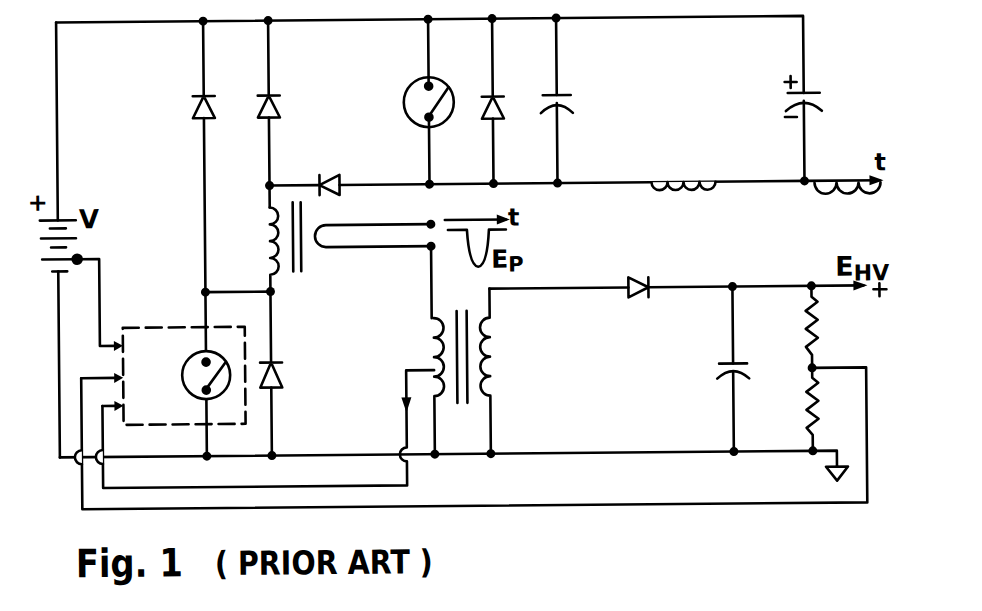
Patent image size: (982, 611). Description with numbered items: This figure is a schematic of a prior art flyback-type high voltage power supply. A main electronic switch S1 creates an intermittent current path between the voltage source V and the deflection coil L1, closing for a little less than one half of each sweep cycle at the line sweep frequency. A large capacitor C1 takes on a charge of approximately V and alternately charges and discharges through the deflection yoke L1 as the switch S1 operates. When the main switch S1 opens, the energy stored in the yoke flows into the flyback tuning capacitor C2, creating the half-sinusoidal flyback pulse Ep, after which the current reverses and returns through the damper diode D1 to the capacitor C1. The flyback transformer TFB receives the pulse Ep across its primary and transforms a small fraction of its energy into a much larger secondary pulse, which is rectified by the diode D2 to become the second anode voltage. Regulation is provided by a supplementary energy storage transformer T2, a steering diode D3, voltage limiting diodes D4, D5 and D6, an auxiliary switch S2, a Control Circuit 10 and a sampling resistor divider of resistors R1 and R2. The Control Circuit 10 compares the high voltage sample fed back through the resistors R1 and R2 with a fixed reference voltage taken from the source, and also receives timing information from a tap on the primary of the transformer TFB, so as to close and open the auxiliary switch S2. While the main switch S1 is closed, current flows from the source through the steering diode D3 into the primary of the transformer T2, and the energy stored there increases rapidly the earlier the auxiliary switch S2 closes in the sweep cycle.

The Control Circuit 10 is at (197, 369).
The damper diode D1 is at (483, 127).
The diode D2 is at (648, 309).
The steering diode D3 is at (717, 385).
The voltage limiting diode D4 is at (182, 121).
The voltage limiting diode D5 is at (291, 120).
The voltage limiting diode D6 is at (294, 386).
The capacitor C1 is at (783, 99).
The flyback tuning capacitor C2 is at (574, 123).
The deflection coil L1 is at (684, 206).
The high voltage sampling resistor R1 is at (830, 326).
The high voltage sampling resistor R2 is at (831, 408).
The main electronic switch S1 is at (456, 92).
The auxiliary switch S2 is at (199, 351).
The supplementary energy storage transformer T2 is at (351, 260).
The flyback transformer TFB is at (463, 413).